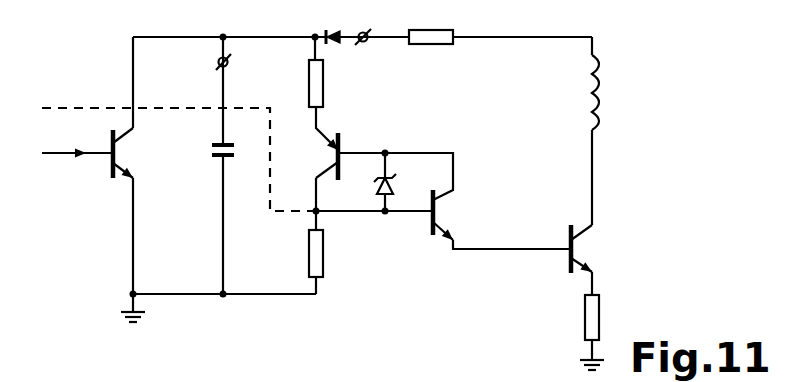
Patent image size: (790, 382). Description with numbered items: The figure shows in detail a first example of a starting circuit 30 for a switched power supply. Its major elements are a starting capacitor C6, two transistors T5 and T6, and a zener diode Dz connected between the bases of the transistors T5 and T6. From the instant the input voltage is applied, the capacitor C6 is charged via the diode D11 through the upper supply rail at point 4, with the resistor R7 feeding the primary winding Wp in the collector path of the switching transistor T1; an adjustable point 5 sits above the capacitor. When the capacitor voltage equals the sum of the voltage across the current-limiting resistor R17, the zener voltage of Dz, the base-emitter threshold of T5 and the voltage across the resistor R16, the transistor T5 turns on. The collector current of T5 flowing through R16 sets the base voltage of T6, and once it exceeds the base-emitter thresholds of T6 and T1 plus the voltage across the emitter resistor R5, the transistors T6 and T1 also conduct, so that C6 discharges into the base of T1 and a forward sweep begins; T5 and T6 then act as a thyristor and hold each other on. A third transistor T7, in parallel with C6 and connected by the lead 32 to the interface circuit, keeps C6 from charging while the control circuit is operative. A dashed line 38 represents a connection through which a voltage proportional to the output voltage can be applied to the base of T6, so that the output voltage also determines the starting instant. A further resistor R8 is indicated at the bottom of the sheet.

The dashed line 38 is at (108, 108).
The lead 32 is at (77, 167).
The third transistor T7 is at (118, 150).
The point 5 is at (218, 63).
The starting capacitor C6 is at (235, 152).
The diode D11 is at (332, 30).
The point 4 is at (359, 33).
The resistor R7 is at (440, 45).
The current-limiting resistor R17 is at (309, 76).
The transistor T5 is at (340, 133).
The resistor R16 is at (323, 262).
The starting circuit 30 is at (334, 291).
The zener diode Dz is at (397, 178).
The transistor T6 is at (444, 211).
The primary winding Wp is at (599, 79).
The switching transistor T1 is at (575, 250).
The resistor R5 is at (599, 327).
The resistor R8 is at (214, 375).